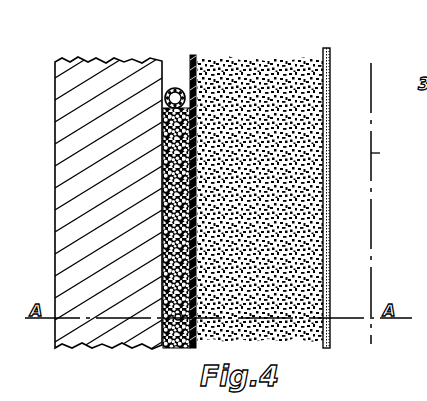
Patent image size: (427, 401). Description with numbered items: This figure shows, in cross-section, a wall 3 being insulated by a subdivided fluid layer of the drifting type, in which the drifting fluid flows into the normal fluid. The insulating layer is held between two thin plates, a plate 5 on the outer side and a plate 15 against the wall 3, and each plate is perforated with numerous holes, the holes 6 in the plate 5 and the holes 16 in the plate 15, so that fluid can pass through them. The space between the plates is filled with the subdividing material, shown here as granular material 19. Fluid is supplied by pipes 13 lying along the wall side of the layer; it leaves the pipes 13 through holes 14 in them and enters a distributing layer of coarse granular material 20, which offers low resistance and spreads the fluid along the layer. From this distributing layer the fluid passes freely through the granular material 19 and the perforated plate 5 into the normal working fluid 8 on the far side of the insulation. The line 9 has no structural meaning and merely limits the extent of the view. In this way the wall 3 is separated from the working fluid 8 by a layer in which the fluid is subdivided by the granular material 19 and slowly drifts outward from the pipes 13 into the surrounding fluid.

The wall 3 is at (64, 90).
The thin plate 5 is at (330, 52).
The holes 6 is at (330, 62).
The normal working fluid 8 is at (353, 127).
The view limit 9 is at (381, 155).
The pipes 13 is at (170, 92).
The holes 14 is at (176, 88).
The thin plate 15 is at (194, 56).
The holes 16 is at (204, 59).
The granular material 19 is at (272, 58).
The coarse granular material 20 is at (180, 347).